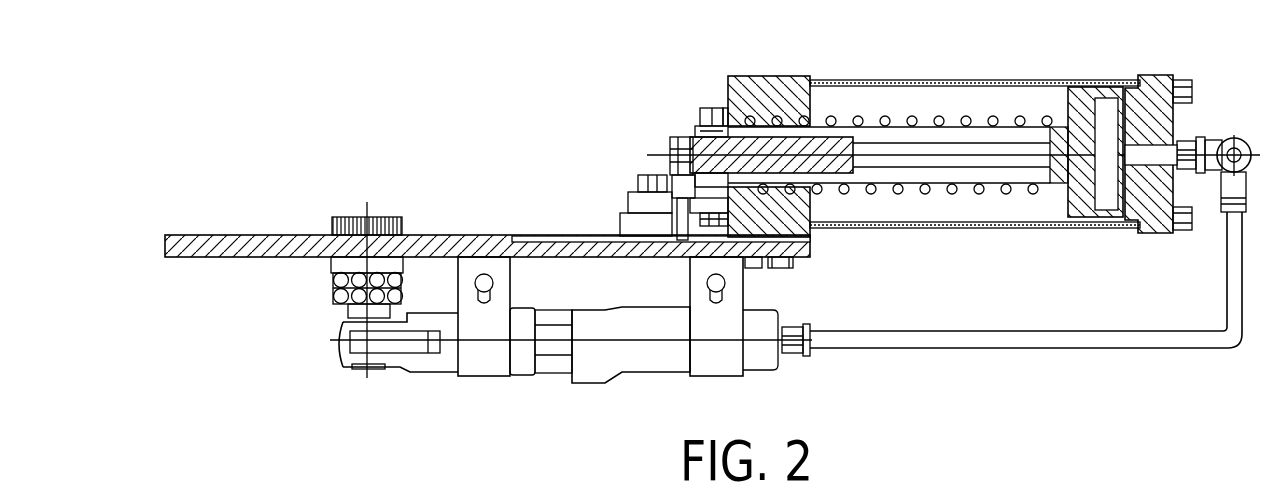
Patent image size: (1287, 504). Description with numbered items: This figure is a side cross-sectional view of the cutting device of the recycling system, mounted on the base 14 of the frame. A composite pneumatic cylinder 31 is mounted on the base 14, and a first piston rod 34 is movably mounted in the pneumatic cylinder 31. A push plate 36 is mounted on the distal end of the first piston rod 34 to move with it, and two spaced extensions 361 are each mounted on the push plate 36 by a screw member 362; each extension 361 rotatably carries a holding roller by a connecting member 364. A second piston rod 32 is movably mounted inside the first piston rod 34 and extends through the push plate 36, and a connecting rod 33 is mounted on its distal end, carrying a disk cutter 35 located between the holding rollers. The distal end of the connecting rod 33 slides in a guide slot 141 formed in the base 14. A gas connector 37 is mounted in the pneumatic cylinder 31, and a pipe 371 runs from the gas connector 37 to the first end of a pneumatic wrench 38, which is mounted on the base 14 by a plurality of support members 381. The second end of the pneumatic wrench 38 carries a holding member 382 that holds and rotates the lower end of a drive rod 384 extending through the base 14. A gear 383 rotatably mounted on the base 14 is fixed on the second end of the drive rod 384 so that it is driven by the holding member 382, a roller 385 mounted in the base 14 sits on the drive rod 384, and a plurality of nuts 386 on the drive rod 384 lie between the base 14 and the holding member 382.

The base 14 is at (268, 242).
The guide slot 141 is at (550, 238).
The composite pneumatic cylinder 31 is at (972, 82).
The second piston rod 32 is at (698, 124).
The connecting rod 33 is at (683, 138).
The first piston rod 34 is at (722, 108).
The disk cutter 35 is at (667, 210).
The push plate 36 is at (712, 108).
The extension 361 is at (632, 205).
The screw member 362 is at (757, 268).
The connecting member 364 is at (640, 178).
The gas connector 37 is at (1212, 140).
The pipe 371 is at (1133, 338).
The pneumatic wrench 38 is at (653, 360).
The support member 381 is at (490, 360).
The holding member 382 is at (350, 316).
The gear 383 is at (390, 216).
The drive rod 384 is at (378, 253).
The roller 385 is at (338, 258).
The nuts 386 is at (330, 296).